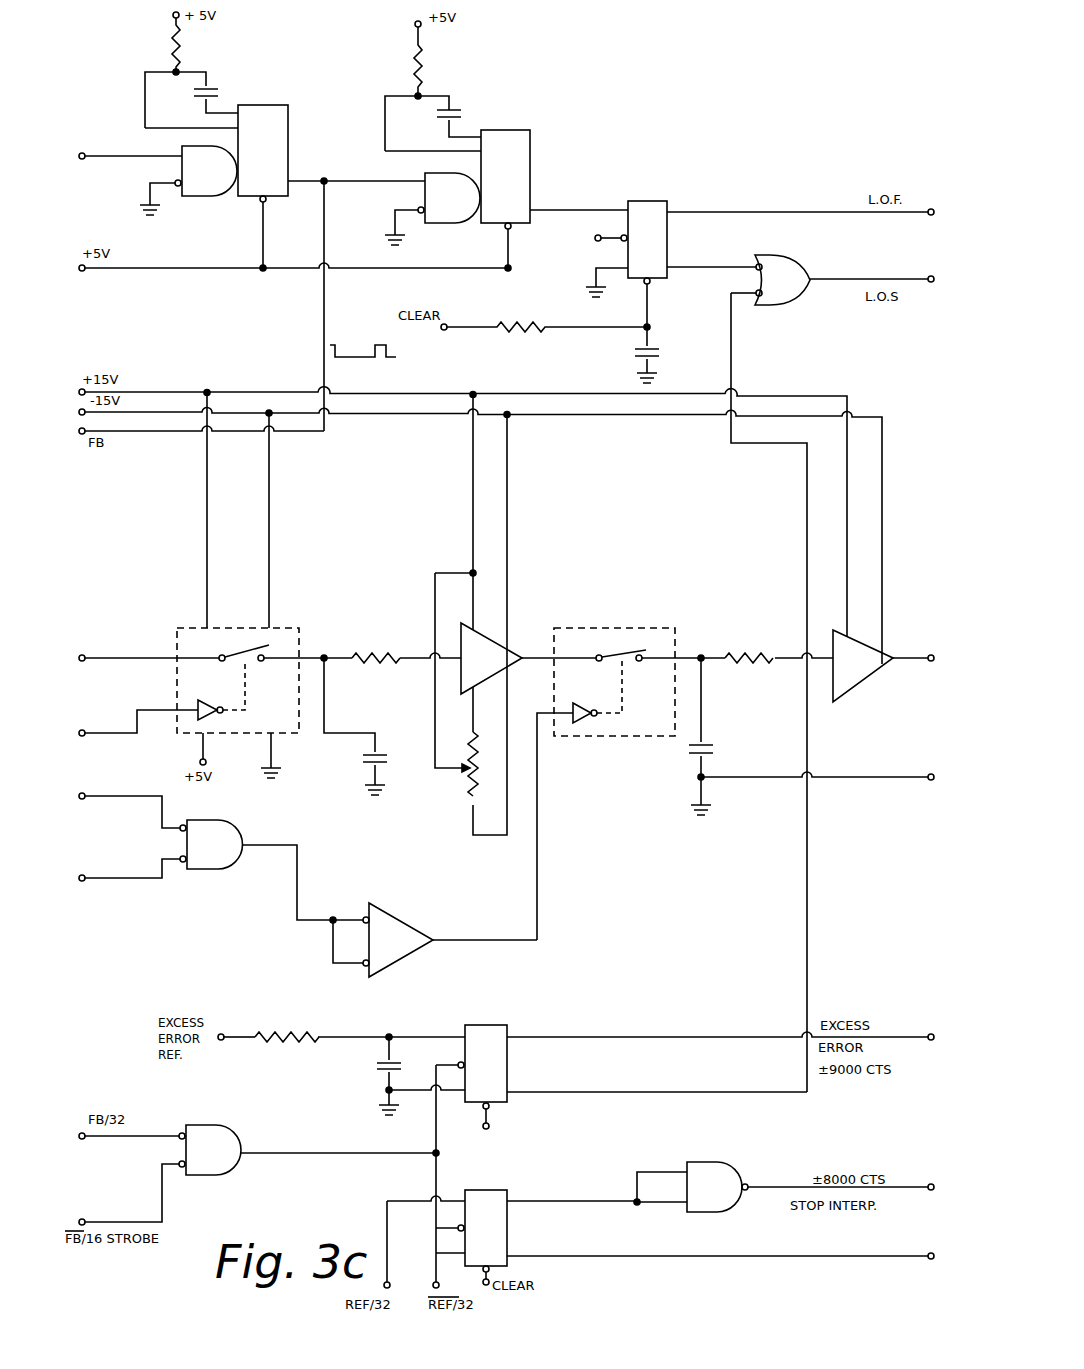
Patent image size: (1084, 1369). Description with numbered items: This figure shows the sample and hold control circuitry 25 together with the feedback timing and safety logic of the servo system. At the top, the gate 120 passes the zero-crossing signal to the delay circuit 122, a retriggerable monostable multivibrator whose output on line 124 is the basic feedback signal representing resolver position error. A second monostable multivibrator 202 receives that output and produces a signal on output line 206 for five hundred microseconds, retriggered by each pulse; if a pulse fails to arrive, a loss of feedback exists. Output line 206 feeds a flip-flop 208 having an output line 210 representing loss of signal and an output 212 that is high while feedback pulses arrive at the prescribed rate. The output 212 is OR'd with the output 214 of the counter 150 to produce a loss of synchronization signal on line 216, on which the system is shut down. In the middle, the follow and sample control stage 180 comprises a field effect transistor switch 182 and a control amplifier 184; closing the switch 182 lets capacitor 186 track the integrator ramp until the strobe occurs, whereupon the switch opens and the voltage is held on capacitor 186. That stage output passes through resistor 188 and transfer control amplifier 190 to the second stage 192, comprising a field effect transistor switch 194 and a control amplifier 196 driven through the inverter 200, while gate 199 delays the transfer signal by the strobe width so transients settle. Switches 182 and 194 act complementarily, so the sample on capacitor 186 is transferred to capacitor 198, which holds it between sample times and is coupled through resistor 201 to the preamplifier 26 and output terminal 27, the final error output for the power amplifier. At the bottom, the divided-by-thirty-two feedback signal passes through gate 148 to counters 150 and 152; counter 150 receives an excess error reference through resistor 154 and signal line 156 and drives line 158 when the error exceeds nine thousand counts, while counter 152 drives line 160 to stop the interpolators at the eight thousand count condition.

The sample and hold control circuitry 25 is at (163, 560).
The preamplifier 26 is at (863, 672).
The output terminal 27 is at (928, 665).
The gate 120 is at (200, 186).
The delay circuit 122 is at (277, 115).
The line 124 is at (303, 181).
The gate 148 is at (225, 1170).
The counter 150 is at (495, 1030).
The counter 152 is at (495, 1243).
The resistor 154 is at (280, 1040).
The signal line 156 is at (458, 1010).
The line 158 is at (925, 1036).
The line 160 is at (778, 1187).
The follow and sample control stage 180 is at (177, 640).
The field effect transistor switch 182 is at (250, 647).
The control amplifier 184 is at (215, 722).
The capacitor 186 is at (392, 752).
The resistor 188 is at (388, 650).
The transfer control amplifier 190 is at (512, 658).
The second stage 192 is at (668, 628).
The field effect transistor switch 194 is at (620, 652).
The control amplifier 196 is at (581, 725).
The capacitor 198 is at (715, 745).
The gate 199 is at (205, 857).
The inverter 200 is at (395, 930).
The resistor 201 is at (760, 652).
The monostable multivibrator 202 is at (523, 137).
The output line 206 is at (597, 210).
The flip-flop 208 is at (646, 208).
The output line 210 is at (780, 212).
The output 212 is at (711, 267).
The output 214 is at (637, 1094).
The line 216 is at (865, 279).